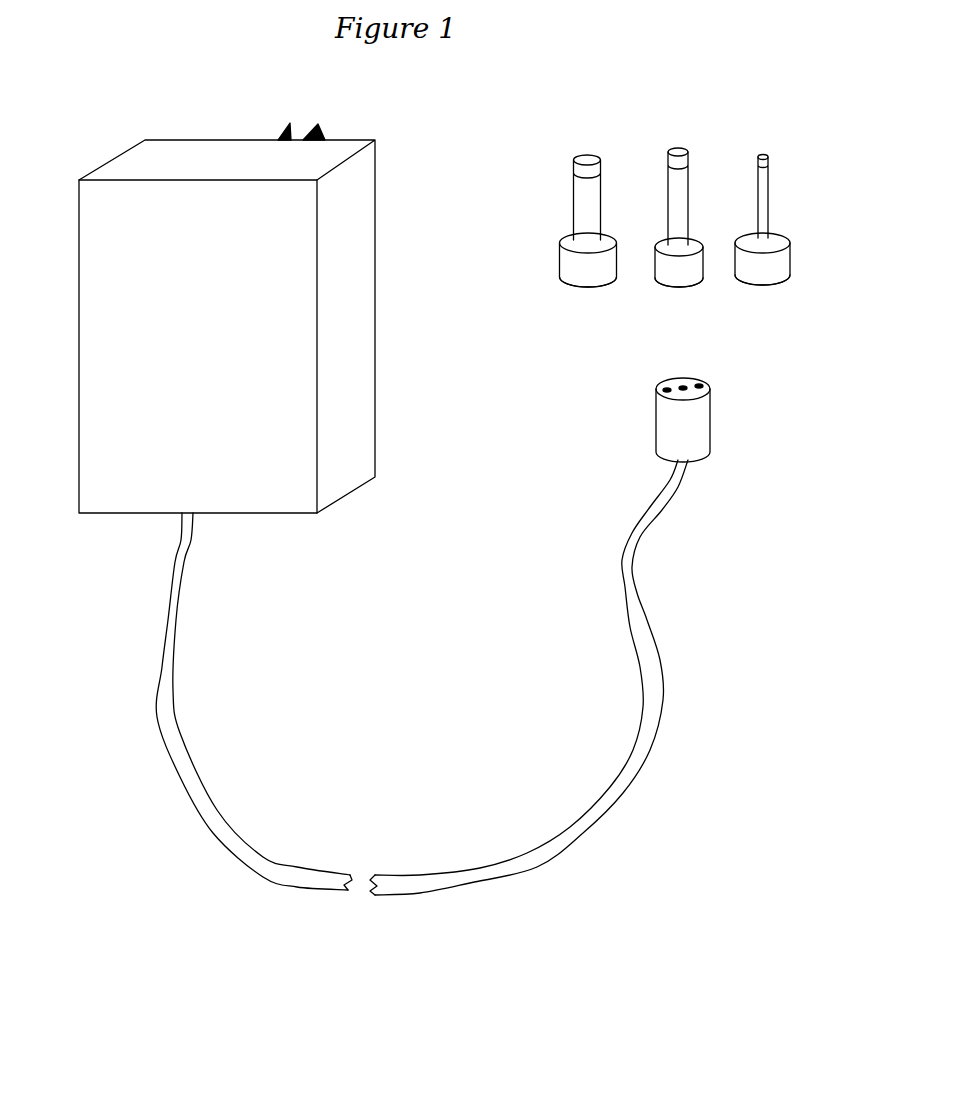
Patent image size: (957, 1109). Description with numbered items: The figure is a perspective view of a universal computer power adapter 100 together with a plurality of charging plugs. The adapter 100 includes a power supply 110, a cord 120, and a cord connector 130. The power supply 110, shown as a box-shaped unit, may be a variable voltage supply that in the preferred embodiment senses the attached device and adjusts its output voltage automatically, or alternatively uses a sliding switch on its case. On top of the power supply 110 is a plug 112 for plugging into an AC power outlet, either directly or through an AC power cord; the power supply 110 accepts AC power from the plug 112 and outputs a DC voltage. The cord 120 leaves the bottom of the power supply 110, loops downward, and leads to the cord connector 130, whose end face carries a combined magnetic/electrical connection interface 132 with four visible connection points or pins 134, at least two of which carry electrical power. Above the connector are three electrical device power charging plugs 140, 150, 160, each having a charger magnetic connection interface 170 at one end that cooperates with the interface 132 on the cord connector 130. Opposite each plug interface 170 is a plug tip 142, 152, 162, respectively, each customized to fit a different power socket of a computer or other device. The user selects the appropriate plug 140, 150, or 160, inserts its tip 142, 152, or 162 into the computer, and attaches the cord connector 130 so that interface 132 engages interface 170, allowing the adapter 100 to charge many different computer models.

The universal computer power adapter 100 is at (632, 79).
The power supply 110 is at (93, 212).
The plug 112 is at (313, 135).
The cord 120 is at (302, 883).
The cord connector 130 is at (698, 398).
The combined magnetic/electrical connection interface 132 is at (703, 375).
The connection points or pins 134 is at (684, 383).
The electrical device power charging plug 140 is at (591, 204).
The plug tip 142 is at (592, 155).
The electrical device power charging plug 150 is at (685, 204).
The plug tip 152 is at (676, 150).
The electrical device power charging plug 160 is at (771, 203).
The plug tip 162 is at (766, 155).
The charger magnetic connection interface 170 is at (753, 278).